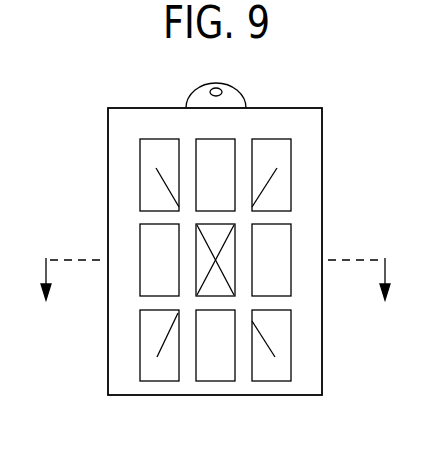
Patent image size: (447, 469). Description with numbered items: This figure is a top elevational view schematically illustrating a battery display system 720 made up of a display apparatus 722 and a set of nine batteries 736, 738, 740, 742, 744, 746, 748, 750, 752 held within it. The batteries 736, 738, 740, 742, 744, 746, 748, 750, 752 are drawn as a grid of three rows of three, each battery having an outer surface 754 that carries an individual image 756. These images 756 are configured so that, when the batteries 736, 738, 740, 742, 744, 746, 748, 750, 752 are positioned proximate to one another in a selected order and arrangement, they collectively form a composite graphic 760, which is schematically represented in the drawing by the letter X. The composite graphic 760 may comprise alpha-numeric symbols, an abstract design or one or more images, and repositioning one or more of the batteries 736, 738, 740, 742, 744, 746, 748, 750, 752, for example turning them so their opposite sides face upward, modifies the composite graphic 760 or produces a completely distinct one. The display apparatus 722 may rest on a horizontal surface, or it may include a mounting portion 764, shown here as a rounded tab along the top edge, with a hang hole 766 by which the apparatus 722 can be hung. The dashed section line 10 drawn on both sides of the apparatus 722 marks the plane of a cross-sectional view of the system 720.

The battery display system 720 is at (103, 76).
The display apparatus 722 is at (300, 108).
The battery 736 is at (149, 155).
The battery 738 is at (215, 139).
The battery 740 is at (265, 188).
The battery 742 is at (148, 238).
The battery 744 is at (222, 289).
The battery 746 is at (293, 256).
The battery 748 is at (160, 370).
The battery 750 is at (218, 370).
The battery 752 is at (273, 370).
The outer surface 754 is at (282, 333).
The image 756 is at (282, 370).
The composite graphic 760 is at (168, 337).
The mounting portion 764 is at (232, 88).
The hang hole 766 is at (213, 90).
The section line 10 is at (215, 270).